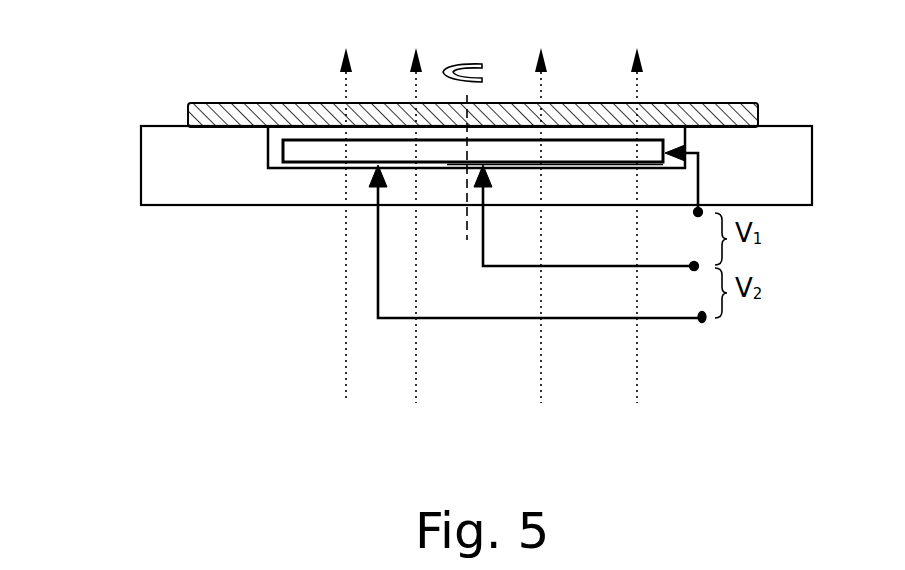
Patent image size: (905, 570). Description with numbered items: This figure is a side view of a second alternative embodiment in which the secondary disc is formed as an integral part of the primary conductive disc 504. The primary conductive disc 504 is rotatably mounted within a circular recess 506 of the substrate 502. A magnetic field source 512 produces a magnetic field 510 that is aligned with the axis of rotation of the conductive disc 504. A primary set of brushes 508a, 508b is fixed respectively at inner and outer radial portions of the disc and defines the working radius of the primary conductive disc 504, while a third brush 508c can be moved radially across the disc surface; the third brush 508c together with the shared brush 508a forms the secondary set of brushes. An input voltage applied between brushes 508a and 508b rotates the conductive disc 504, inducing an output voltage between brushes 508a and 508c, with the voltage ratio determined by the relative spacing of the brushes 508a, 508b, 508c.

The substrate 502 is at (207, 190).
The primary conductive disc 504 is at (293, 139).
The circular recess 506 is at (267, 157).
The brush 508a is at (484, 165).
The brush 508b is at (674, 150).
The third brush 508c is at (377, 165).
The magnetic field 510 is at (415, 355).
The magnetic field source 512 is at (184, 118).